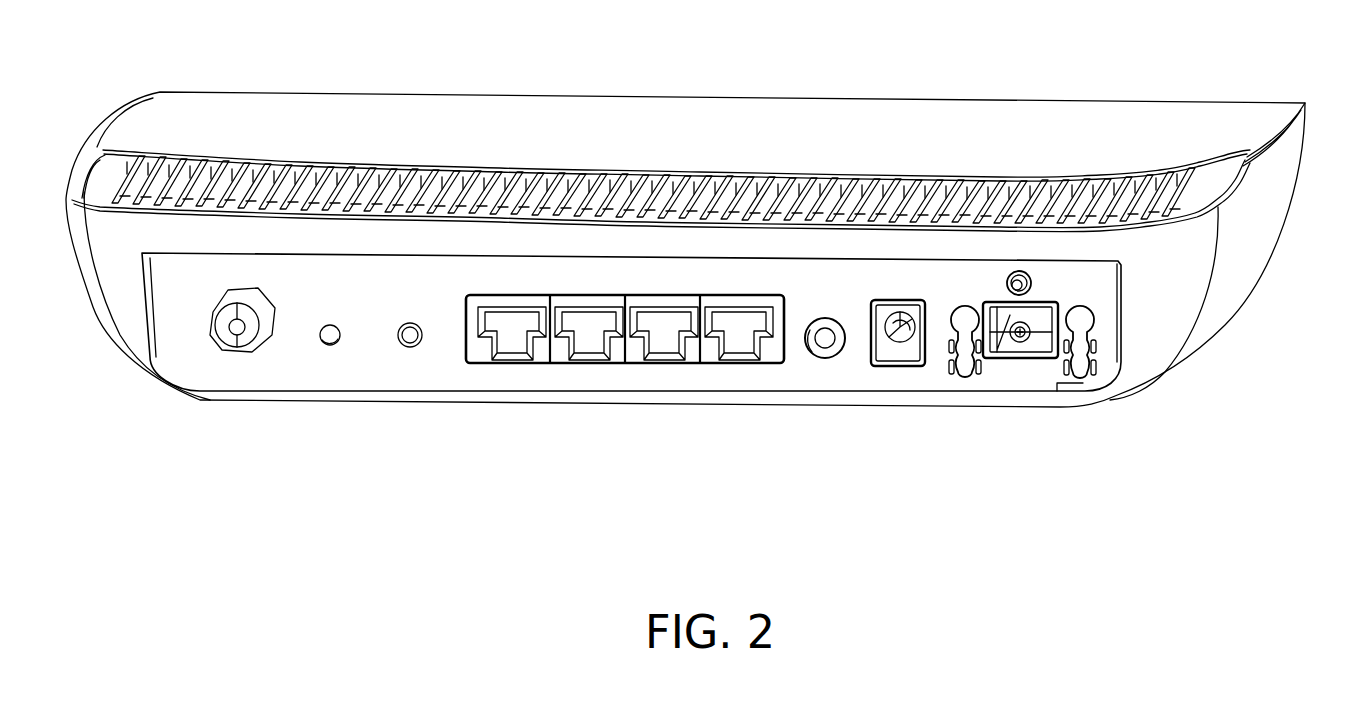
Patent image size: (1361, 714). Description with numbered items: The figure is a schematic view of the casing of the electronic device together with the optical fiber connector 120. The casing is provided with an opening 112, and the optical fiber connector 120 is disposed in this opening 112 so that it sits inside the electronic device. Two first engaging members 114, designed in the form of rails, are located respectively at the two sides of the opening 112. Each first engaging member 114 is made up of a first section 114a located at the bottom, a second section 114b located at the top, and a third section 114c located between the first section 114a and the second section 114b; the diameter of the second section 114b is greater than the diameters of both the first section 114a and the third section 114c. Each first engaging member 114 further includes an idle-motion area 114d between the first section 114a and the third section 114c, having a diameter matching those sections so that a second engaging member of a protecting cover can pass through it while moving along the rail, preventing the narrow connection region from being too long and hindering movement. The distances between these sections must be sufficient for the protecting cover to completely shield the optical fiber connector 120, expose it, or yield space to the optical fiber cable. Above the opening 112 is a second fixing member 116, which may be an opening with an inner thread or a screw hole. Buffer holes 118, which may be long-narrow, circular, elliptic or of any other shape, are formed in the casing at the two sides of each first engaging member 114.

The opening 112 is at (1061, 283).
The first engaging member 114 is at (1044, 404).
The first section 114a is at (1095, 401).
The second section 114b is at (825, 345).
The third section 114c is at (893, 366).
The idle-motion area 114d is at (950, 358).
The second fixing member 116 is at (1015, 271).
The buffer hole 118 is at (1063, 378).
The optical fiber connector 120 is at (1003, 358).